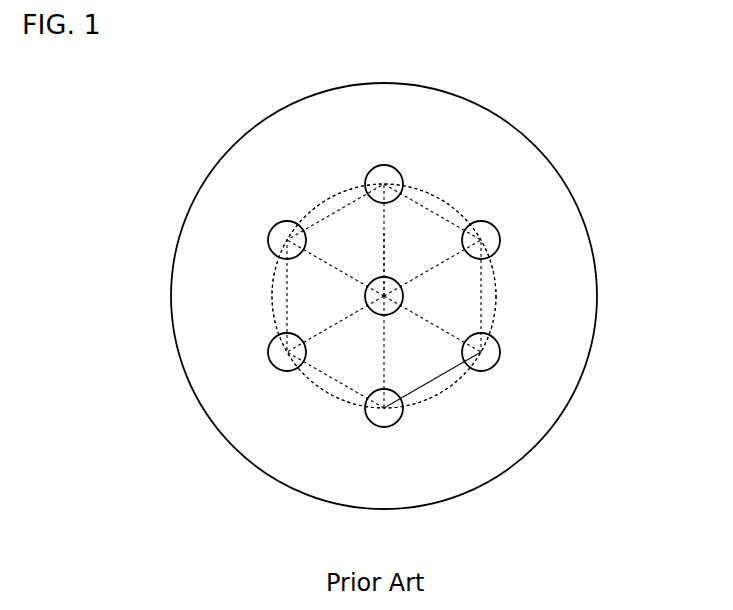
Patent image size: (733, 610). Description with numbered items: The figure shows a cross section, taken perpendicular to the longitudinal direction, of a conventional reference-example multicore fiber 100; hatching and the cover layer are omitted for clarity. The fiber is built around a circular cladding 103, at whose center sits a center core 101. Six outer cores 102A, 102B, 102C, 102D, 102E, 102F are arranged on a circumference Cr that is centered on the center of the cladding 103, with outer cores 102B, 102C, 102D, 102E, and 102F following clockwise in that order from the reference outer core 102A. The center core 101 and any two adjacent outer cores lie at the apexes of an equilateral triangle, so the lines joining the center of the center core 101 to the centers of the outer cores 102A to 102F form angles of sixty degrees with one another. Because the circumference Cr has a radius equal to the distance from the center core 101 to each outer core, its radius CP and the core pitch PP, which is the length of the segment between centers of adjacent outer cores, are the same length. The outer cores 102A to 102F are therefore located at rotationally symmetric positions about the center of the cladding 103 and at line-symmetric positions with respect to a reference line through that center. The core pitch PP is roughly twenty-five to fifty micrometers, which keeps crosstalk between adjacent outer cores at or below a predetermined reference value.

The multicore fiber 100 is at (546, 122).
The center core 101 is at (367, 292).
The outer core 102A is at (370, 171).
The outer core 102B is at (490, 242).
The outer core 102C is at (490, 360).
The outer core 102D is at (373, 414).
The outer core 102E is at (280, 356).
The outer core 102F is at (272, 236).
The cladding 103 is at (582, 298).
The circumference Cr is at (303, 217).
The radius of the circumference CP is at (385, 228).
The core pitch PP is at (437, 377).